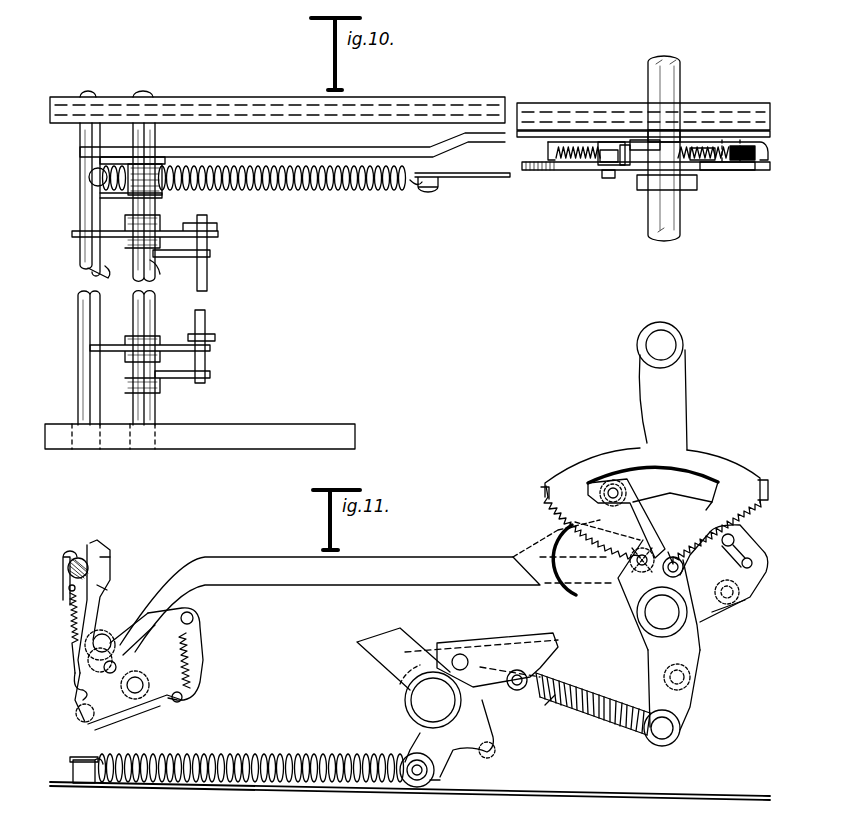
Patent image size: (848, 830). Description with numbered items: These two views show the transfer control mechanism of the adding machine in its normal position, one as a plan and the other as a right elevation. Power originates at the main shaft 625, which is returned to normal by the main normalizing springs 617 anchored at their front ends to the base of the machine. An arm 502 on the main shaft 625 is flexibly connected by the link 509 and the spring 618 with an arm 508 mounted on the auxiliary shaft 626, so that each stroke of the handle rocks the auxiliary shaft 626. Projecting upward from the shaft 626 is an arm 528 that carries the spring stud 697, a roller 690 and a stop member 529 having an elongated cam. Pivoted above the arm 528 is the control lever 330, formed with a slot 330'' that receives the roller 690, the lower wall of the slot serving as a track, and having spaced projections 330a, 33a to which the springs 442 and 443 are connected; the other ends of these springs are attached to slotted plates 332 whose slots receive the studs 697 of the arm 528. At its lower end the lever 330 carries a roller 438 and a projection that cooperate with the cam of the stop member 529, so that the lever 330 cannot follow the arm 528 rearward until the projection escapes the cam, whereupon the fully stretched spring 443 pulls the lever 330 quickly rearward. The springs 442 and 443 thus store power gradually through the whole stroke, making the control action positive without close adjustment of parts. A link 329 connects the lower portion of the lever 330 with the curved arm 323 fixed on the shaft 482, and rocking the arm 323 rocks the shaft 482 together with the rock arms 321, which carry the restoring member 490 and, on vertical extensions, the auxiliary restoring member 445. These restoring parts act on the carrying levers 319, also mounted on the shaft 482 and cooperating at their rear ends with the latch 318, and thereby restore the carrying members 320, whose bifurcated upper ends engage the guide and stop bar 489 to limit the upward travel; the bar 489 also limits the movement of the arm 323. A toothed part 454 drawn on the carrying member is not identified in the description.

In FIG. 11, the latch 318 is at (203, 668).
In FIG. 11, the carrying lever 319 is at (75, 688).
In FIG. 11, the carrying member 320 is at (102, 640).
In FIG. 10, the rock arm 321 is at (105, 203).
In FIG. 11, the rock arm 321 is at (112, 712).
In FIG. 10, the arm 323 is at (155, 158).
In FIG. 11, the arm 323 is at (108, 565).
In FIG. 10, the link 329 is at (370, 157).
In FIG. 11, the link 329 is at (292, 585).
In FIG. 10, the control lever 330 is at (699, 117).
In FIG. 11, the control lever 330 is at (664, 469).
In FIG. 11, the slot 330'' is at (727, 469).
In FIG. 11, the spaced projection 330a is at (765, 480).
In FIG. 11, the sector end 33a is at (543, 487).
In FIG. 10, the slotted plate 332 is at (665, 150).
In FIG. 11, the slotted plate 332 is at (650, 528).
In FIG. 11, the roller 438 is at (727, 605).
In FIG. 10, the spring 442 is at (700, 165).
In FIG. 11, the spring 442 is at (738, 505).
In FIG. 10, the spring 443 is at (585, 162).
In FIG. 11, the spring 443 is at (588, 528).
In FIG. 11, the auxiliary restoring member 445 is at (112, 664).
In FIG. 11, the rack teeth 454 is at (68, 620).
In FIG. 10, the shaft 482 is at (152, 270).
In FIG. 11, the shaft 482 is at (140, 692).
In FIG. 10, the guide and stop bar 489 is at (80, 320).
In FIG. 11, the guide and stop bar 489 is at (72, 560).
In FIG. 10, the restoring member 490 is at (105, 270).
In FIG. 11, the restoring member 490 is at (82, 718).
In FIG. 11, the arm 502 is at (522, 650).
In FIG. 11, the arm 508 is at (683, 700).
In FIG. 11, the link 509 is at (584, 715).
In FIG. 11, the spring 618 is at (548, 705).
In FIG. 10, the arm 528 is at (750, 172).
In FIG. 11, the arm 528 is at (527, 540).
In FIG. 10, the stop member 529 is at (753, 175).
In FIG. 11, the stop member 529 is at (735, 532).
In FIG. 10, the main normalizing spring 617 is at (348, 196).
In FIG. 11, the main shaft 625 is at (420, 706).
In FIG. 10, the auxiliary shaft 626 is at (655, 213).
In FIG. 11, the auxiliary shaft 626 is at (672, 618).
In FIG. 10, the roller 690 is at (605, 150).
In FIG. 11, the roller 690 is at (610, 480).
In FIG. 10, the spring stud 697 is at (640, 178).
In FIG. 11, the spring stud 697 is at (628, 583).